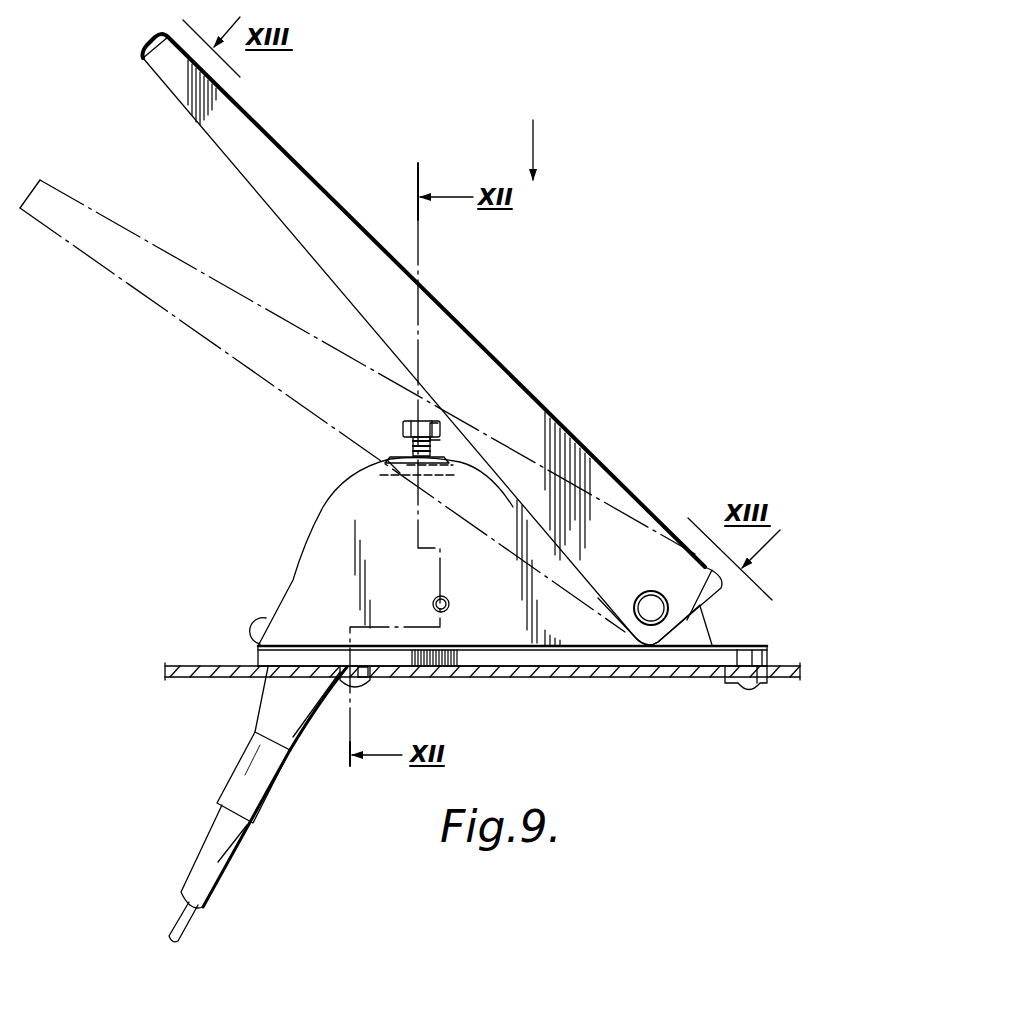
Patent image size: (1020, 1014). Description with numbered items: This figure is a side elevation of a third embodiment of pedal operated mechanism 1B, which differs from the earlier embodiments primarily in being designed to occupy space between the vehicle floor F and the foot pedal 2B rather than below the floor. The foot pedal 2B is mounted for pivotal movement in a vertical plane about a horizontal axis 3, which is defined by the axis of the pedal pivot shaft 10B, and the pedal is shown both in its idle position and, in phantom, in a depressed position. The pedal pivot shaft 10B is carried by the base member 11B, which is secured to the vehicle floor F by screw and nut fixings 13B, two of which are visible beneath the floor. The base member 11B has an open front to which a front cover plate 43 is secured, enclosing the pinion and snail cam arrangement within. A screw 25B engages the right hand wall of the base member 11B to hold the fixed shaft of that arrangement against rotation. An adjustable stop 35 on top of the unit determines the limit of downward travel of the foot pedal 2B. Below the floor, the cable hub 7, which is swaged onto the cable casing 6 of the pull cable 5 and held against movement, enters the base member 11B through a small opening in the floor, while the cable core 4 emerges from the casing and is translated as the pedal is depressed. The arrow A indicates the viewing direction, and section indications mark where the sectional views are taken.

The pedal operated mechanism 1B is at (580, 428).
The foot pedal 2B is at (510, 402).
The horizontal axis 3 is at (651, 625).
The cable core 4 is at (188, 924).
The pull cable 5 is at (198, 838).
The cable casing 6 is at (240, 855).
The cable hub 7 is at (247, 760).
The pedal pivot shaft 10B is at (651, 592).
The base member 11B is at (703, 620).
The screw and nut fixings 13B is at (366, 690).
The screw 25B is at (450, 604).
The adjustable stop 35 is at (405, 424).
The front cover plate 43 is at (292, 580).
The viewing direction arrow A is at (543, 114).
The vehicle floor F is at (785, 665).